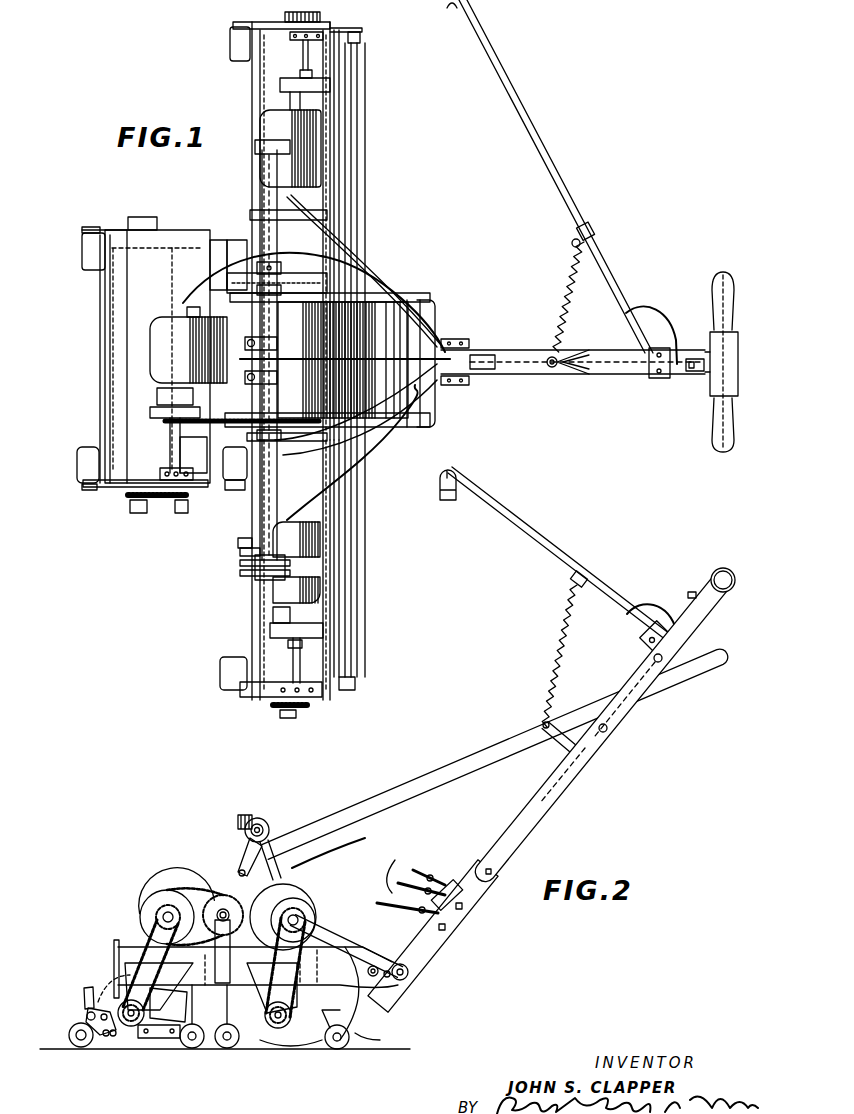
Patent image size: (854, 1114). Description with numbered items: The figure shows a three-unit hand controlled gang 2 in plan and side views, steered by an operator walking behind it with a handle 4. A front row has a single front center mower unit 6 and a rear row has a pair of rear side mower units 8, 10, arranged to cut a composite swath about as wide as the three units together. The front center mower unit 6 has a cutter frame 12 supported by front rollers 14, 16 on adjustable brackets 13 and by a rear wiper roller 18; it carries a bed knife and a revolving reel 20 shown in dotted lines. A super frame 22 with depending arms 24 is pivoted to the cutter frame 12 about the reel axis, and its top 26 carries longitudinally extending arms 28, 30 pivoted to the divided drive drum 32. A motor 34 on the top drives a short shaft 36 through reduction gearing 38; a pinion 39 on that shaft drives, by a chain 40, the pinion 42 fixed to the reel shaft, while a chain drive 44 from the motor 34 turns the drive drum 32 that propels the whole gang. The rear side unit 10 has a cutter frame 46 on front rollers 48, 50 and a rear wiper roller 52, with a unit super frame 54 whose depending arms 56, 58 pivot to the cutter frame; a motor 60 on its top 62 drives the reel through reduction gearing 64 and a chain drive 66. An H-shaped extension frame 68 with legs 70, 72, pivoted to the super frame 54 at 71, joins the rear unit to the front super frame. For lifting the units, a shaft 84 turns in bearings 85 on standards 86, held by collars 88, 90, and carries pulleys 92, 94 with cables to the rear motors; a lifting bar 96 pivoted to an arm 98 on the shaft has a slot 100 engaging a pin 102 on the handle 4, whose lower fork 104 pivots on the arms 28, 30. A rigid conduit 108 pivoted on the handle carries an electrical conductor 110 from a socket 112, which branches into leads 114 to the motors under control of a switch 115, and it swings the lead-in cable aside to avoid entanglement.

In FIG. 1, the three-unit hand controlled gang 2 is at (458, 280).
In FIG. 2, the three-unit hand controlled gang 2 is at (323, 813).
In FIG. 1, the handle 4 is at (736, 273).
In FIG. 2, the handle 4 is at (724, 567).
In FIG. 1, the front center mower unit 6 is at (70, 258).
In FIG. 2, the front center mower unit 6 is at (88, 953).
In FIG. 1, the rear side mower unit 8 is at (380, 72).
In FIG. 1, the rear side mower unit 10 is at (370, 605).
In FIG. 2, the rear side mower unit 10 is at (297, 1063).
In FIG. 1, the cutter frame 12 is at (115, 484).
In FIG. 2, the cutter frame 12 is at (143, 1038).
In FIG. 1, the adjustable brackets 13 is at (92, 228).
In FIG. 2, the adjustable brackets 13 is at (97, 1040).
In FIG. 1, the front roller 14 is at (83, 468).
In FIG. 2, the front roller 14 is at (69, 1031).
In FIG. 1, the front roller 16 is at (84, 264).
In FIG. 1, the rear wiper roller 18 is at (220, 262).
In FIG. 2, the rear wiper roller 18 is at (194, 1048).
In FIG. 1, the revolving reel 20 is at (180, 286).
In FIG. 2, the revolving reel 20 is at (107, 990).
In FIG. 1, the super frame 22 is at (170, 224).
In FIG. 2, the super frame 22 is at (112, 945).
In FIG. 1, the depending arms 24 is at (189, 236).
In FIG. 2, the depending arms 24 is at (187, 990).
In FIG. 1, the top 26 is at (137, 383).
In FIG. 1, the longitudinally extending arm 28 is at (408, 430).
In FIG. 2, the longitudinally extending arm 28 is at (348, 995).
In FIG. 1, the longitudinally extending arm 30 is at (218, 266).
In FIG. 1, the divided drive drum 32 is at (348, 400).
In FIG. 2, the divided drive drum 32 is at (352, 1033).
In FIG. 1, the motor 34 is at (160, 333).
In FIG. 2, the motor 34 is at (173, 880).
In FIG. 1, the short shaft 36 is at (177, 444).
In FIG. 1, the reduction gearing 38 is at (160, 414).
In FIG. 2, the reduction gearing 38 is at (157, 900).
In FIG. 1, the pinion 39 is at (185, 506).
In FIG. 2, the pinion 39 is at (147, 933).
In FIG. 1, the chain 40 is at (160, 506).
In FIG. 2, the chain 40 is at (133, 973).
In FIG. 1, the pinion 42 is at (140, 506).
In FIG. 2, the pinion 42 is at (122, 1035).
In FIG. 1, the chain drive 44 is at (221, 440).
In FIG. 2, the chain drive 44 is at (220, 884).
In FIG. 2, the cutter frame 46 is at (280, 1051).
In FIG. 1, the front roller 48 is at (230, 669).
In FIG. 2, the front roller 48 is at (226, 1048).
In FIG. 1, the front roller 50 is at (237, 478).
In FIG. 1, the rear wiper roller 52 is at (352, 580).
In FIG. 2, the rear wiper roller 52 is at (343, 1048).
In FIG. 2, the unit super frame 54 is at (325, 961).
In FIG. 1, the depending arm 56 is at (312, 699).
In FIG. 2, the depending arm 56 is at (308, 978).
In FIG. 1, the depending arm 58 is at (308, 448).
In FIG. 1, the motor 60 is at (267, 589).
In FIG. 2, the motor 60 is at (284, 890).
In FIG. 1, the top 62 is at (263, 623).
In FIG. 1, the reduction gearing 64 is at (281, 642).
In FIG. 2, the reduction gearing 64 is at (318, 900).
In FIG. 1, the chain drive 66 is at (288, 719).
In FIG. 2, the chain drive 66 is at (308, 925).
In FIG. 1, the extension frame 68 is at (243, 543).
In FIG. 1, the leg 70 is at (247, 553).
In FIG. 1, the pivot 71 is at (248, 573).
In FIG. 1, the leg 72 is at (323, 541).
In FIG. 1, the shaft 84 is at (268, 200).
In FIG. 2, the shaft 84 is at (262, 818).
In FIG. 1, the bearings 85 is at (271, 296).
In FIG. 2, the bearings 85 is at (277, 868).
In FIG. 1, the standards 86 is at (345, 320).
In FIG. 2, the standards 86 is at (295, 869).
In FIG. 1, the collar 88 is at (273, 266).
In FIG. 1, the collar 90 is at (275, 440).
In FIG. 1, the pulley 92 is at (257, 142).
In FIG. 1, the pulley 94 is at (247, 574).
In FIG. 2, the pulley 94 is at (268, 822).
In FIG. 1, the lifting bar 96 is at (501, 348).
In FIG. 2, the lifting bar 96 is at (432, 776).
In FIG. 1, the arm 98 is at (258, 381).
In FIG. 2, the arm 98 is at (250, 852).
In FIG. 2, the slot 100 is at (582, 715).
In FIG. 2, the pin 102 is at (630, 722).
In FIG. 1, the fork 104 is at (434, 318).
In FIG. 2, the fork 104 is at (430, 957).
In FIG. 1, the rigid conduit 108 is at (569, 203).
In FIG. 2, the rigid conduit 108 is at (553, 548).
In FIG. 1, the electrical conductor 110 is at (661, 326).
In FIG. 2, the electrical conductor 110 is at (655, 608).
In FIG. 1, the socket 112 is at (450, 8).
In FIG. 2, the socket 112 is at (447, 510).
In FIG. 1, the leads 114 is at (352, 290).
In FIG. 2, the leads 114 is at (400, 868).
In FIG. 1, the switch 115 is at (692, 372).
In FIG. 2, the switch 115 is at (690, 592).